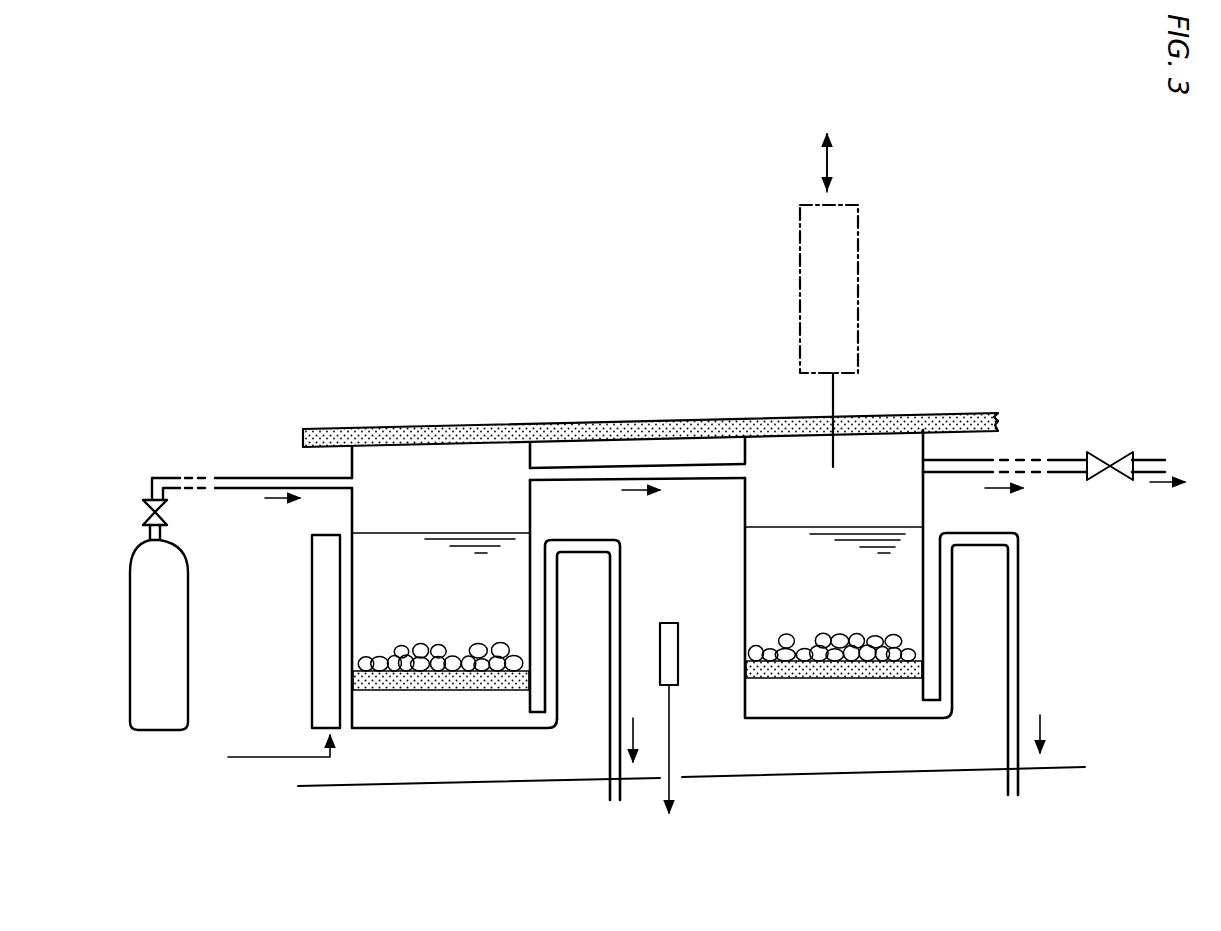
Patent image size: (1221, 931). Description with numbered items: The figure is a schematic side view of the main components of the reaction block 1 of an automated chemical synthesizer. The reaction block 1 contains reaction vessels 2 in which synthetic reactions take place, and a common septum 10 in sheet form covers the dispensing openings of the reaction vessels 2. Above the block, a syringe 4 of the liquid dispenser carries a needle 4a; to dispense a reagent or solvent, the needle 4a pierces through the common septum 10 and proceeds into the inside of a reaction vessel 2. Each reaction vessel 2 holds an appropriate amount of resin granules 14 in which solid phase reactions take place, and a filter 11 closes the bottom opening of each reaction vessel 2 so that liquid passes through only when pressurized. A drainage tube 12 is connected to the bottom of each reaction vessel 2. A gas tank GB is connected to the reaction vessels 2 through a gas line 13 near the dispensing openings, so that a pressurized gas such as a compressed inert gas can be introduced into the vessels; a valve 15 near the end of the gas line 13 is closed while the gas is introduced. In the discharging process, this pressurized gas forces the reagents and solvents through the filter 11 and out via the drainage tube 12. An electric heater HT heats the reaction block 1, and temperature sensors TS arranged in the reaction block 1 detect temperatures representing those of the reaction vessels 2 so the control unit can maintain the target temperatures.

The reaction block 1 is at (511, 408).
The reaction vessel 2 is at (531, 506).
The syringe 4 is at (860, 303).
The needle 4a is at (834, 397).
The common septum 10 is at (627, 418).
The filter 11 is at (490, 690).
The drainage tube 12 is at (621, 574).
The gas line 13 is at (243, 489).
The resin granules 14 is at (400, 648).
The valve 15 is at (1118, 482).
The gas tank GB is at (192, 591).
The electric heater HT is at (310, 648).
The temperature sensor TS is at (679, 660).